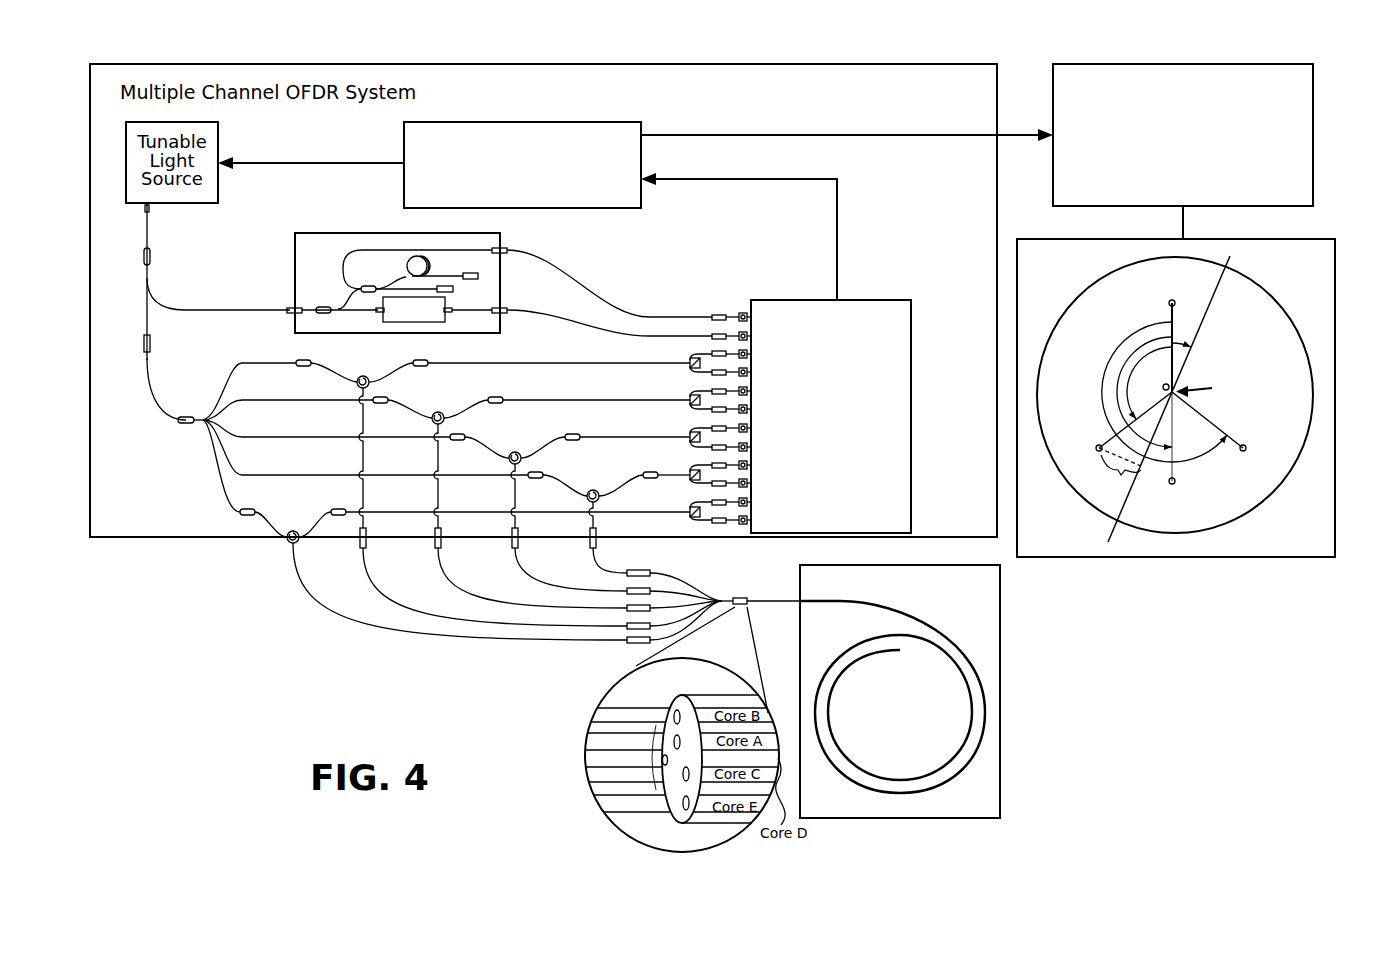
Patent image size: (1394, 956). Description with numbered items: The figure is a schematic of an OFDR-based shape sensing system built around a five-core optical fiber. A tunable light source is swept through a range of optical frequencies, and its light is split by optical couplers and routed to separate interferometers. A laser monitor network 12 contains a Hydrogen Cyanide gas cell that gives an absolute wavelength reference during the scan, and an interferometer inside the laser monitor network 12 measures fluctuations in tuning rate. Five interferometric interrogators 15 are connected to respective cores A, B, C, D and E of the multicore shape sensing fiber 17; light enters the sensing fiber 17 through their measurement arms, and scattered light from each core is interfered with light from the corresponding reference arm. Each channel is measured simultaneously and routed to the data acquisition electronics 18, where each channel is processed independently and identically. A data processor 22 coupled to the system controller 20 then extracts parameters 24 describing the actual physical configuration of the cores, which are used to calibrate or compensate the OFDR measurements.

The laser monitor network 12 is at (500, 235).
The interferometric interrogators 15 is at (192, 448).
The multicore shape sensing fiber 17 is at (1000, 627).
The data acquisition electronics 18 is at (900, 300).
The system controller 20 is at (618, 122).
The data processor 22 is at (1290, 64).
The parameters 24 is at (1335, 250).